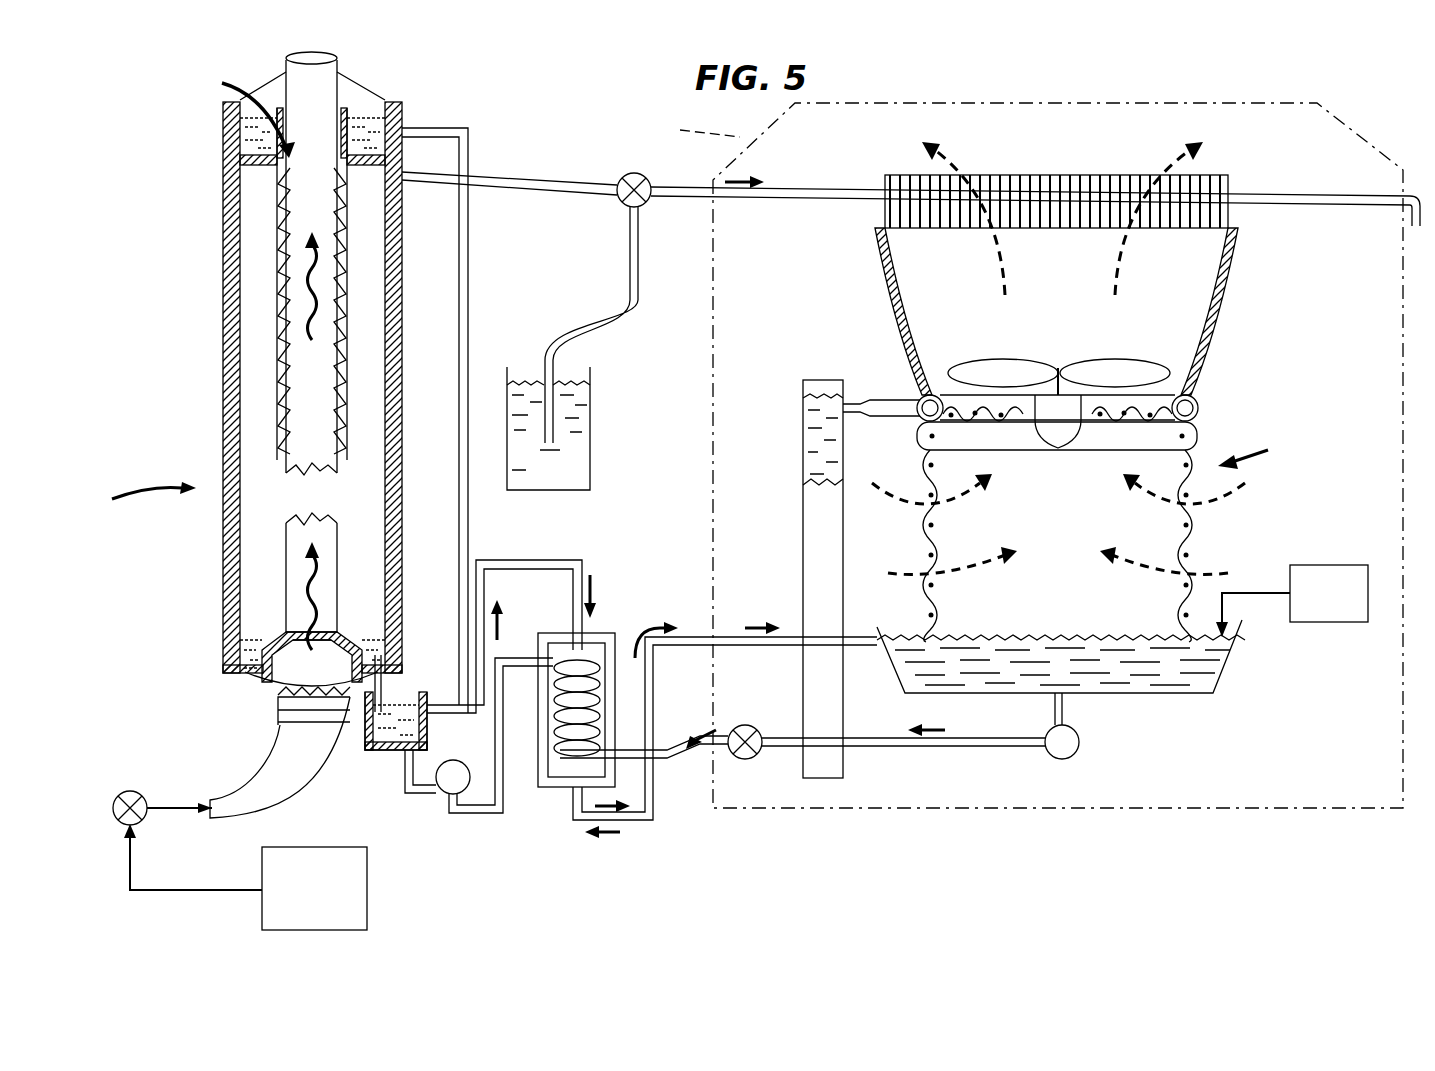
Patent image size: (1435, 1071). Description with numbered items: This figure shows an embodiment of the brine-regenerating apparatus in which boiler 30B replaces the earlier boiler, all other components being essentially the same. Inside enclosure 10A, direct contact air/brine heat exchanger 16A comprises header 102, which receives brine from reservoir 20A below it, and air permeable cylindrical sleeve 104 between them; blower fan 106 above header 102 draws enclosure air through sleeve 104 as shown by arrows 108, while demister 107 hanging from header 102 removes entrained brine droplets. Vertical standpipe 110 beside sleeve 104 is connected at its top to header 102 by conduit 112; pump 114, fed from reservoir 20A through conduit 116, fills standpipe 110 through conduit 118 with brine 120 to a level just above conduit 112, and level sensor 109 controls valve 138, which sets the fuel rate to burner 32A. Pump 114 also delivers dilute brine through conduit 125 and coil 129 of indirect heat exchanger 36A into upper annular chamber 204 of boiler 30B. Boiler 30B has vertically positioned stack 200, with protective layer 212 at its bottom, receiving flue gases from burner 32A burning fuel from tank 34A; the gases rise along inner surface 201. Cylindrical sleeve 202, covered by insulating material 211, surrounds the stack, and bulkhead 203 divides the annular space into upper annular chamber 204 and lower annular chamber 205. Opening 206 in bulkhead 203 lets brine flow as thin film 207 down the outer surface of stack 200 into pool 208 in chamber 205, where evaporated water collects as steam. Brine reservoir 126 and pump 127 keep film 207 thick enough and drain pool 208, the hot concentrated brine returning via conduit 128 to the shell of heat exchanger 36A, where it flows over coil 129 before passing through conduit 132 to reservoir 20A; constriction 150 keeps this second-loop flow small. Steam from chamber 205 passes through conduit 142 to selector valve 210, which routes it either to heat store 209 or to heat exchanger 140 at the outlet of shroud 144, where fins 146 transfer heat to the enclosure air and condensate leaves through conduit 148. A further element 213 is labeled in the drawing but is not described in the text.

The enclosure 10A is at (1215, 103).
The direct contact air/brine heat exchanger 16A is at (1256, 451).
The reservoir 20A is at (1225, 660).
The boiler 30B is at (135, 497).
The burner 32A is at (320, 742).
The fuel tank 34A is at (348, 847).
The indirect heat exchanger 36A is at (557, 635).
The header 102 is at (1205, 413).
The air permeable cylindrical sleeve 104 is at (1202, 548).
The blower fan 106 is at (1108, 373).
The demister 107 is at (1125, 423).
The arrows 108 is at (958, 579).
The level sensor 109 is at (1335, 565).
The vertical standpipe 110 is at (815, 535).
The conduit 112 is at (848, 398).
The pump 114 is at (1062, 760).
The conduit 116 is at (1055, 710).
The conduit 118 is at (885, 748).
The brine 120 is at (805, 444).
The conduit 125 is at (468, 525).
The brine reservoir 126 is at (427, 696).
The pump 127 is at (482, 814).
The concentrated brine conduit 128 is at (582, 560).
The coil 129 is at (563, 770).
The conduit 132 is at (742, 630).
The valve 138 is at (125, 790).
The heat exchanger 140 is at (1085, 175).
The conduit 142 is at (530, 190).
The shroud 144 is at (910, 305).
The fins 146 is at (910, 188).
The conduit 148 is at (1300, 196).
The constriction 150 is at (745, 726).
The stack 200 is at (337, 58).
The inner surface 201 is at (343, 205).
The cylindrical sleeve 202 is at (230, 315).
The bulkhead 203 is at (240, 140).
The upper annular chamber 204 is at (367, 105).
The lower annular chamber 205 is at (400, 384).
The opening 206 is at (235, 112).
The thin film 207 is at (392, 289).
The pool 208 is at (255, 640).
The heat store 209 is at (580, 437).
The selector valve 210 is at (625, 205).
The insulating material 211 is at (230, 404).
The protective layer 212 is at (297, 676).
The break 213 is at (285, 473).